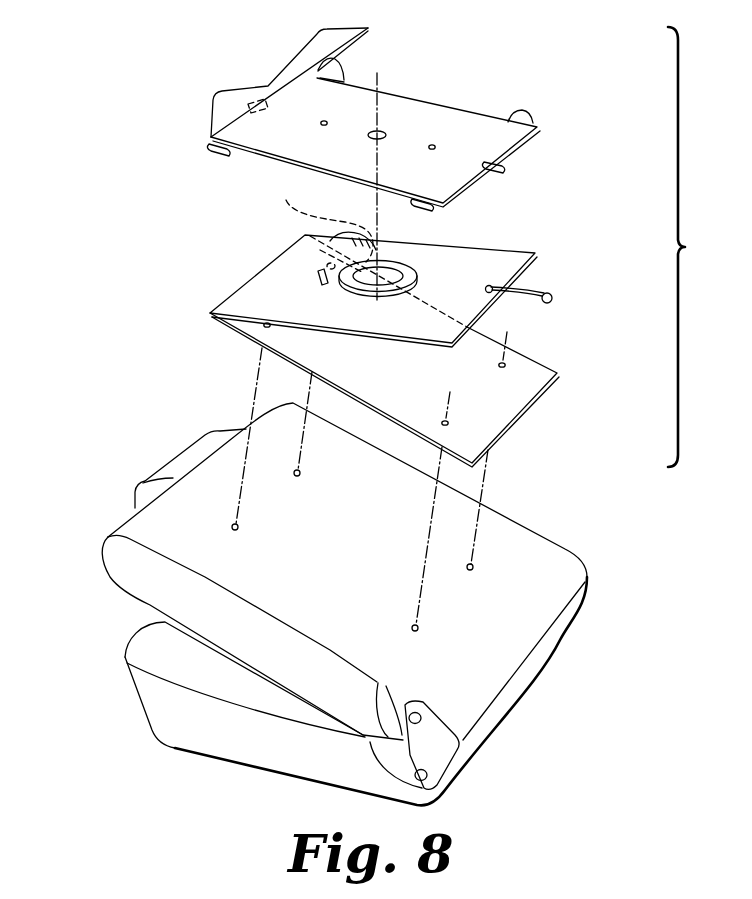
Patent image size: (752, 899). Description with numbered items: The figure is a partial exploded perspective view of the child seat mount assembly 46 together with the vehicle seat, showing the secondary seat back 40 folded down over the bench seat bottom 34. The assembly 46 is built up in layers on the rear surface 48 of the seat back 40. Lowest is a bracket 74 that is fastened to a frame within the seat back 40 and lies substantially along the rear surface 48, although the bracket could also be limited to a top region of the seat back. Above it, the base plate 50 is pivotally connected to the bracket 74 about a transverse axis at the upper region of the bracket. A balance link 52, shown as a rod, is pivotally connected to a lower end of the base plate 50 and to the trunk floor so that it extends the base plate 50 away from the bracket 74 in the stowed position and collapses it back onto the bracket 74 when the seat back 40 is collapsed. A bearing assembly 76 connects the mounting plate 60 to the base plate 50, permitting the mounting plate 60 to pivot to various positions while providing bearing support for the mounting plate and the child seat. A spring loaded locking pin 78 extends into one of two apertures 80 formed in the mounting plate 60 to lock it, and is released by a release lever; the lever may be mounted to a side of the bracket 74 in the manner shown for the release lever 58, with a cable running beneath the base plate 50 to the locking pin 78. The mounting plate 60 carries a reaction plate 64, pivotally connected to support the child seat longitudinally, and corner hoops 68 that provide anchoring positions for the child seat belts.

The bench seat bottom 34 is at (258, 740).
The secondary seat back 40 is at (118, 560).
The child seat mount assembly 46 is at (691, 247).
The rear surface 48 is at (357, 566).
The base plate 50 is at (537, 267).
The balance link 52 is at (552, 300).
The release lever 58 is at (371, 200).
The mounting plate 60 is at (453, 105).
The reaction plate 64 is at (288, 58).
The hoops 68 is at (325, 68).
The bracket 74 is at (527, 353).
The bearing assembly 76 is at (400, 260).
The locking pin 78 is at (317, 278).
The apertures 80 is at (325, 121).